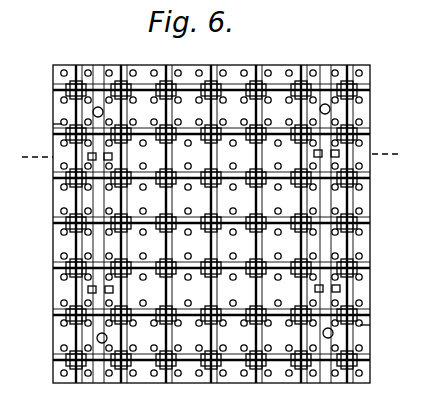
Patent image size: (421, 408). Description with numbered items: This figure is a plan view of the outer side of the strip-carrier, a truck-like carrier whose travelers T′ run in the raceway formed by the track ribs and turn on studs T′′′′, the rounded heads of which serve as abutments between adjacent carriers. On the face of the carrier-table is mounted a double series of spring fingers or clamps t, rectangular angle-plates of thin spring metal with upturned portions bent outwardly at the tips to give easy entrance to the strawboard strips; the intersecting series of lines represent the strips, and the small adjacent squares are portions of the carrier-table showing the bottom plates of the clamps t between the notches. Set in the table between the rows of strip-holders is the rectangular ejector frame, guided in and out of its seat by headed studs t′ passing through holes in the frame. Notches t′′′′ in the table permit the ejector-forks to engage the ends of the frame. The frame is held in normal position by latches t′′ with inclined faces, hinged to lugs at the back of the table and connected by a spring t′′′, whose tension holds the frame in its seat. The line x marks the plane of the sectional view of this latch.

The traveler T′ is at (283, 65).
The stud T′′′′ is at (100, 65).
The spring finger or clamp t is at (252, 157).
The stud t′ is at (93, 113).
The latch t′′ is at (352, 288).
The spring t′′′ is at (365, 325).
The notch t′′′′ is at (55, 123).
The section line x is at (208, 156).